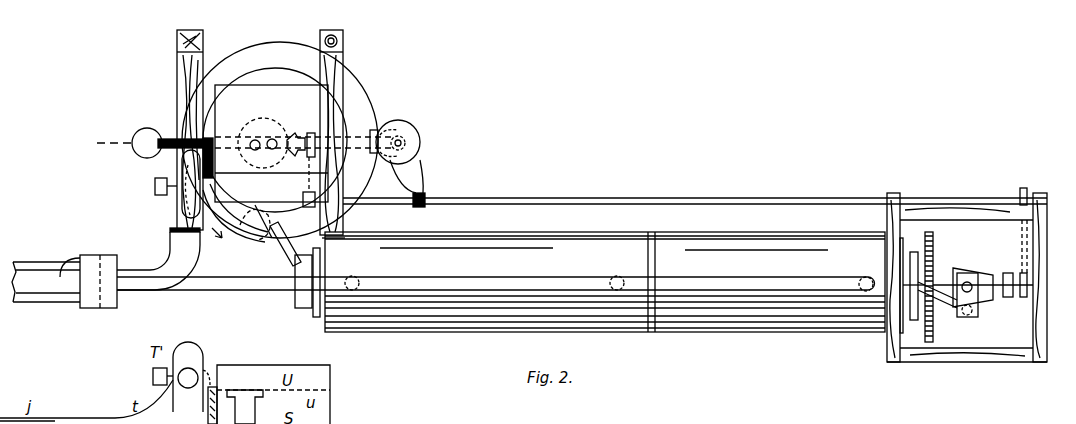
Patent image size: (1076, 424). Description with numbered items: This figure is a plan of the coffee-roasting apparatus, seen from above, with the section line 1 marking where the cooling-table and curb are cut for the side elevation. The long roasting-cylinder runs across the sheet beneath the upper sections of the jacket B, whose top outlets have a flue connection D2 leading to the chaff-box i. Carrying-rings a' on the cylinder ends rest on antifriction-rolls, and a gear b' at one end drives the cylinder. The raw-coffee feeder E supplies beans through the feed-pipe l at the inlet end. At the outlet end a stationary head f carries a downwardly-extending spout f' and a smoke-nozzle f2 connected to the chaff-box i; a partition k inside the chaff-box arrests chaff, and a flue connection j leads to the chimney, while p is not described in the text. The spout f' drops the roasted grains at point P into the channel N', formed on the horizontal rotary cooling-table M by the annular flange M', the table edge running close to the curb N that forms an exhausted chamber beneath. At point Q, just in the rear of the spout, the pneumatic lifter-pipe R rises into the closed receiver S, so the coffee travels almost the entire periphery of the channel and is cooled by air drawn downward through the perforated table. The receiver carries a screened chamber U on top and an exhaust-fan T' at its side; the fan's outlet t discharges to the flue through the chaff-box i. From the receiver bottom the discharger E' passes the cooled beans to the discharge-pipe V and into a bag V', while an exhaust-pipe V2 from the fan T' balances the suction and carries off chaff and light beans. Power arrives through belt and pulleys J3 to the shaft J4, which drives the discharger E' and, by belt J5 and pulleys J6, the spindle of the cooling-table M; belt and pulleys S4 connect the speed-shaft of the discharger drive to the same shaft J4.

The section line 1 is at (345, 250).
The discharge-pipe V is at (168, 129).
The bag V' is at (146, 150).
The exhaust-pipe V2 is at (219, 158).
The curb N is at (280, 140).
The channel N' is at (212, 130).
The rotary cooling-table M is at (275, 140).
The annular flange M' is at (315, 130).
The receiver S is at (250, 86).
The discharger E' is at (299, 150).
The pulleys J6 is at (405, 124).
The screened chamber U is at (241, 185).
The belt and pulleys S4 is at (303, 181).
The belt J5 is at (415, 181).
The shaft J4 is at (827, 196).
The belt and pulleys J3 is at (1021, 188).
The carrying-rings a' is at (914, 252).
The gear b' is at (968, 287).
The feed-pipe l is at (950, 310).
The raw-coffee feeder E is at (983, 304).
The exhaust-fan T' is at (167, 191).
The flue connection j is at (33, 262).
The pipe connection p is at (62, 258).
The partition k is at (90, 258).
The chaff-box i is at (110, 258).
The outlet t is at (156, 266).
The pneumatic lifter-pipe R is at (235, 225).
The point Q is at (256, 223).
The spout f' is at (287, 265).
The stationary head f is at (306, 291).
The point P is at (340, 234).
The smoke-nozzle f2 is at (243, 296).
The cylinder A is at (325, 332).
The flue connection D2 is at (560, 276).
The upper sections of the jacket B is at (756, 261).